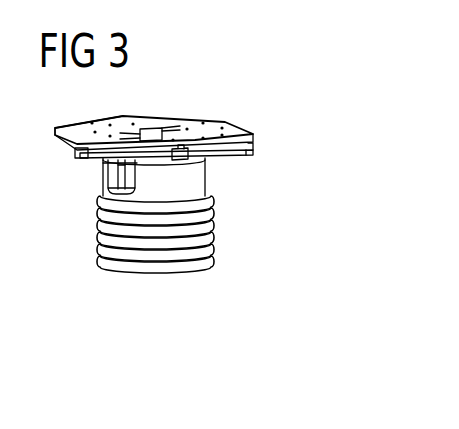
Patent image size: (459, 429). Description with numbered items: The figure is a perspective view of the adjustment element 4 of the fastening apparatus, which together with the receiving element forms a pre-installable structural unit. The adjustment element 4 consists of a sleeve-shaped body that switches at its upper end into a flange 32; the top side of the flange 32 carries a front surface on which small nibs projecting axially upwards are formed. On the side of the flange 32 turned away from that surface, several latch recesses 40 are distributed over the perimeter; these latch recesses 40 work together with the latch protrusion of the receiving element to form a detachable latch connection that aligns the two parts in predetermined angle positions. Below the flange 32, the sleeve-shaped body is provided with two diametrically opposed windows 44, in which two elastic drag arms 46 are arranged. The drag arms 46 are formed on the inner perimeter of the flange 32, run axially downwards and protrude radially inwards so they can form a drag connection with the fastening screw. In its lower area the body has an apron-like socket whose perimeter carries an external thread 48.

The adjustment element 4 is at (235, 236).
The flange 32 is at (212, 123).
The latch recesses 40 is at (236, 151).
The windows 44 is at (106, 181).
The drag arms 46 is at (138, 176).
The external thread 48 is at (98, 225).